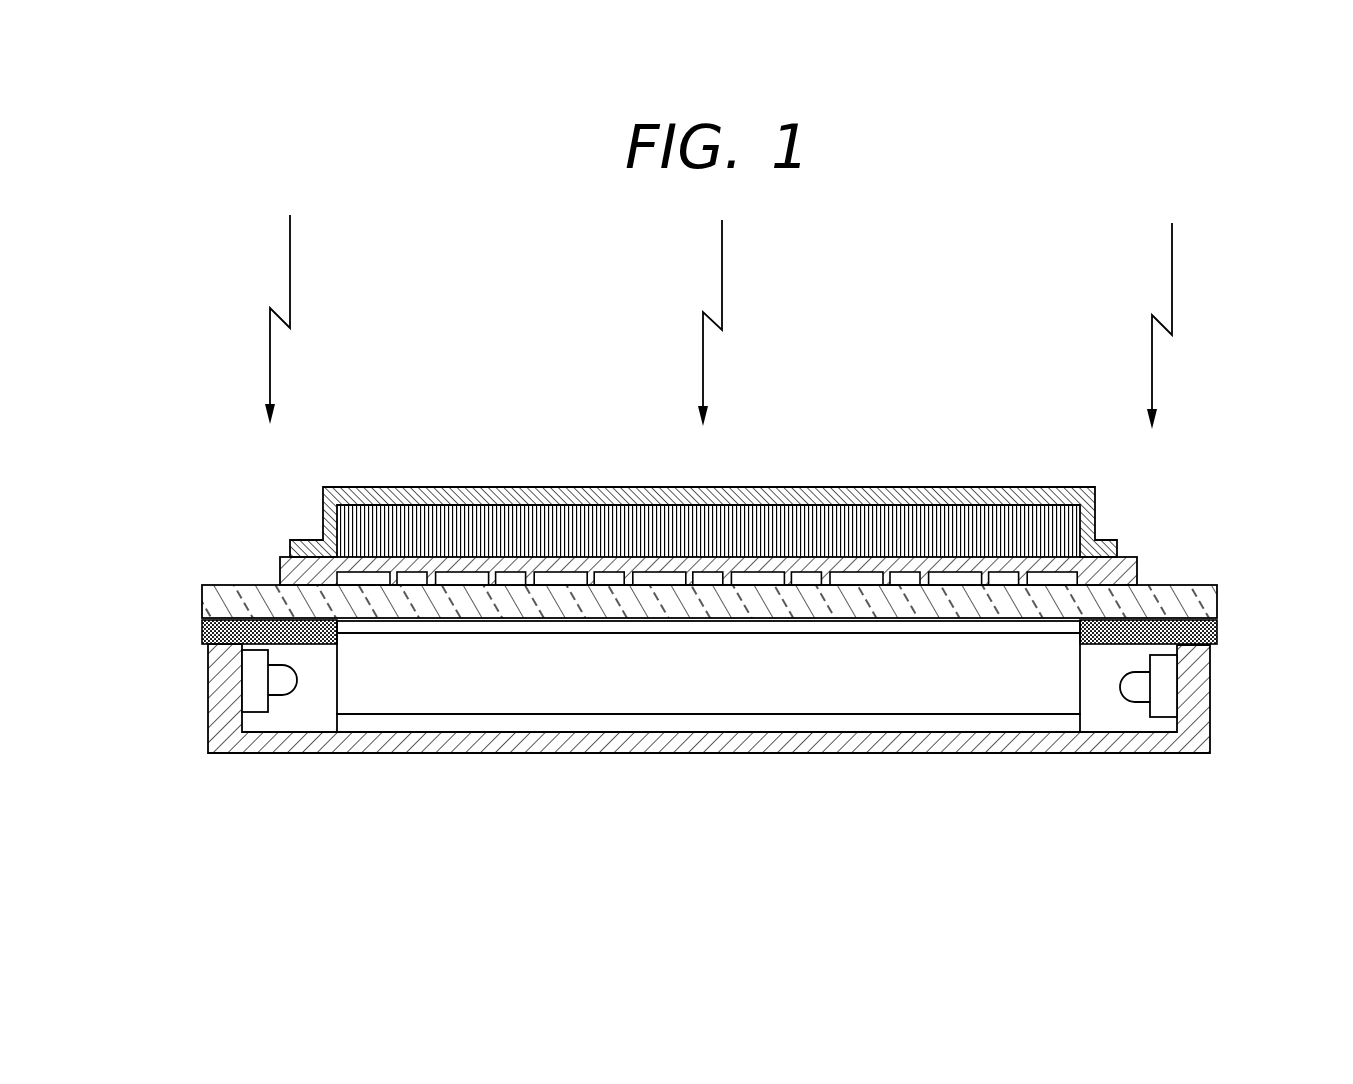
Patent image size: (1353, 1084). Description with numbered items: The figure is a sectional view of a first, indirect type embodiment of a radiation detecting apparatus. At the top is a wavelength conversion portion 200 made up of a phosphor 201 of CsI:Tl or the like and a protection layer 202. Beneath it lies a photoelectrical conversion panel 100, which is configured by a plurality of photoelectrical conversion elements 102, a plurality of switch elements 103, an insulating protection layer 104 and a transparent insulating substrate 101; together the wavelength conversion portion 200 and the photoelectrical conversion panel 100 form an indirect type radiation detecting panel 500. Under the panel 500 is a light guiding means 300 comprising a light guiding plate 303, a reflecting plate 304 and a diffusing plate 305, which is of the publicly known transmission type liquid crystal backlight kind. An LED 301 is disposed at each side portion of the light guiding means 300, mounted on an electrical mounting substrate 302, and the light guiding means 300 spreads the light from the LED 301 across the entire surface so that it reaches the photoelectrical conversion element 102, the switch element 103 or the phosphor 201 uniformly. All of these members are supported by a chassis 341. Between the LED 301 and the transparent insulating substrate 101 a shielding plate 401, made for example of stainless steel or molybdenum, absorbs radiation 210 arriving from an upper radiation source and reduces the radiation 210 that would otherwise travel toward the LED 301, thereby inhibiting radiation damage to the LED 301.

The indirect type radiation detecting panel 500 is at (686, 644).
The wavelength conversion portion 200 is at (616, 486).
The phosphor 201 is at (778, 497).
The protection layer 202 is at (928, 510).
The photoelectrical conversion panel 100 is at (720, 516).
The transparent insulating substrate 101 is at (1200, 602).
The photoelectrical conversion element 102 is at (1065, 573).
The switch element 103 is at (1008, 578).
The insulating protection layer 104 is at (280, 570).
The radiation 210 is at (724, 277).
The light guiding means 300 is at (766, 747).
The LED 301 is at (705, 822).
The electrical mounting substrate 302 is at (253, 702).
The light guiding plate 303 is at (443, 697).
The reflecting plate 304 is at (567, 722).
The diffusing plate 305 is at (670, 633).
The chassis 341 is at (907, 743).
The shielding plate 401 is at (202, 627).